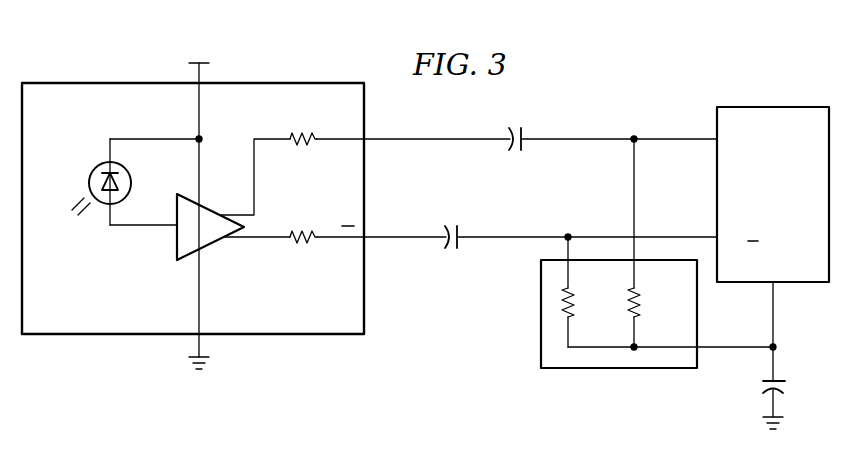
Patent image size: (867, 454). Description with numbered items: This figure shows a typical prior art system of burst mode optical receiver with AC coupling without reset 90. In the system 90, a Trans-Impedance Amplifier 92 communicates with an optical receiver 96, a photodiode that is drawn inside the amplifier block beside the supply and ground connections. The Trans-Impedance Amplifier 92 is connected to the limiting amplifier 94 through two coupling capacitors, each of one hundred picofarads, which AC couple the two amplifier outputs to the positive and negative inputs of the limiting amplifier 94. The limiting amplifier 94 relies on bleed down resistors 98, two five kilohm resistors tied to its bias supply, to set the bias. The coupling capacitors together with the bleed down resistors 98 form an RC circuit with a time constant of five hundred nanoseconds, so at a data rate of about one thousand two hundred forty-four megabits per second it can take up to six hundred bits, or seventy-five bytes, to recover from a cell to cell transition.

The system of burst mode optical receiver with AC coupling without reset 90 is at (608, 80).
The Trans-Impedance Amplifier 92 is at (210, 246).
The limiting amplifier 94 is at (784, 106).
The optical receiver 96 is at (89, 176).
The bleed down resistors 98 is at (533, 329).